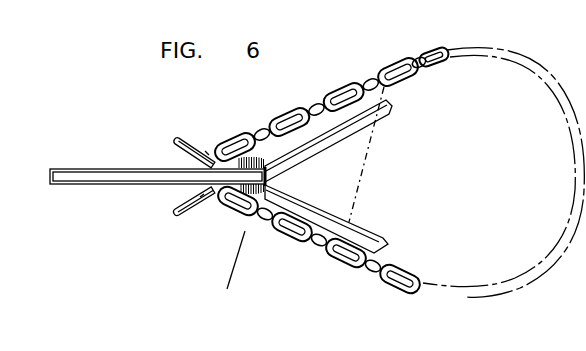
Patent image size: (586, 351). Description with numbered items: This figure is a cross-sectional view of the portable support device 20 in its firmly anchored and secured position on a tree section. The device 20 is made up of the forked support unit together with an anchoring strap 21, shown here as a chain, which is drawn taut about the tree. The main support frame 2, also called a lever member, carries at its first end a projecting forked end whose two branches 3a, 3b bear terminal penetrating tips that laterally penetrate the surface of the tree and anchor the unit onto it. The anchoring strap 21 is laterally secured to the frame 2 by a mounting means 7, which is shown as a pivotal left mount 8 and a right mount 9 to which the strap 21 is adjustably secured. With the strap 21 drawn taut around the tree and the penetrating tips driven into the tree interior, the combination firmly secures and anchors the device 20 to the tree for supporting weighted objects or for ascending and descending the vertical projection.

The main support frame 2 is at (78, 169).
The lower arm 3a is at (304, 204).
The upper arm 3b is at (317, 147).
The mounting means 7 is at (177, 143).
The pivotal left mount 8 is at (205, 151).
The right mount 9 is at (200, 197).
The portable support device 20 is at (227, 289).
The anchoring strap 21 is at (344, 88).